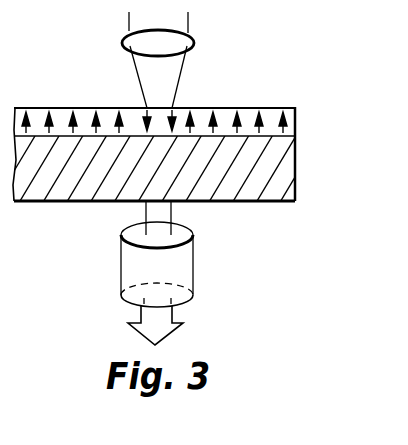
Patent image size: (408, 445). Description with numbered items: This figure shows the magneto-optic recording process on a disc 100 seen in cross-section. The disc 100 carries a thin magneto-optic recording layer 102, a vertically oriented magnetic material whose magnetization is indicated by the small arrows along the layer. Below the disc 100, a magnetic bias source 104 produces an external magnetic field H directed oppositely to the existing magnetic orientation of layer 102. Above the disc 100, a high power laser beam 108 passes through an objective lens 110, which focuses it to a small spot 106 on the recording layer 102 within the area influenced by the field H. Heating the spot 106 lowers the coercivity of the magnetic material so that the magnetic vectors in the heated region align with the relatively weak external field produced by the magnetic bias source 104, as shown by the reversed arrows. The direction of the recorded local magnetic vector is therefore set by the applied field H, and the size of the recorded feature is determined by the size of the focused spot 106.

The disc 100 is at (283, 173).
The magneto-optic recording layer 102 is at (295, 130).
The magnetic bias source 104 is at (194, 268).
The spot 106 is at (163, 107).
The high power laser beam 108 is at (188, 27).
The objective lens 110 is at (126, 45).